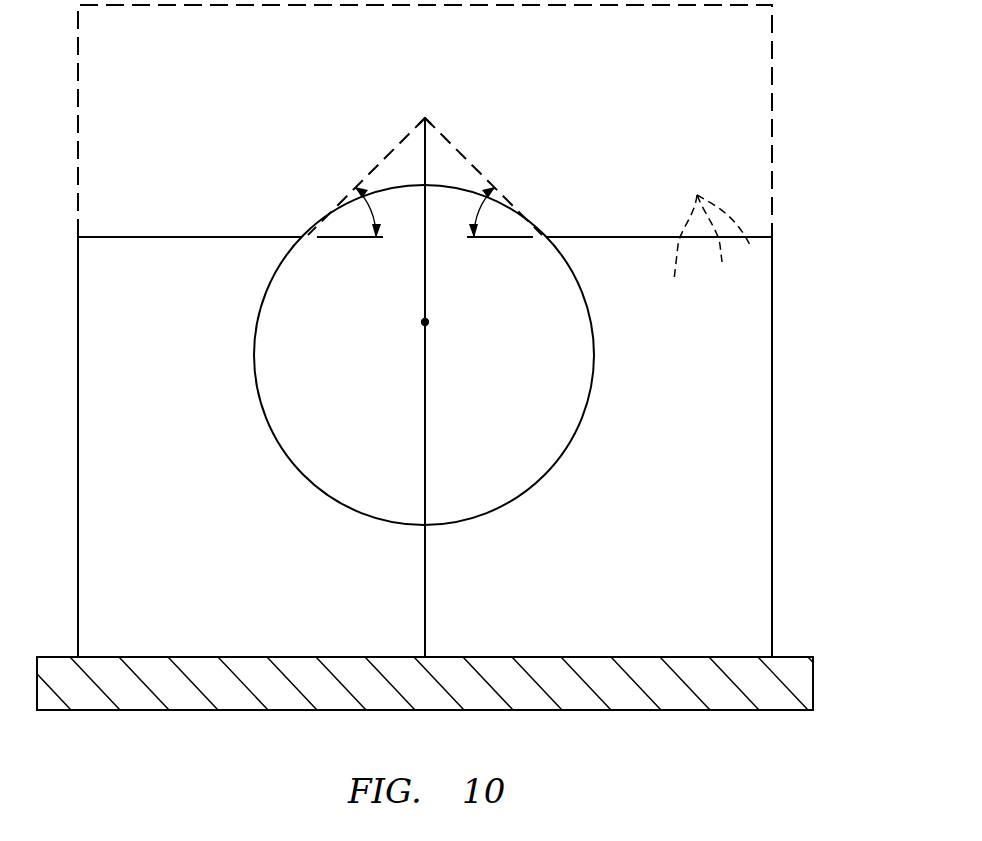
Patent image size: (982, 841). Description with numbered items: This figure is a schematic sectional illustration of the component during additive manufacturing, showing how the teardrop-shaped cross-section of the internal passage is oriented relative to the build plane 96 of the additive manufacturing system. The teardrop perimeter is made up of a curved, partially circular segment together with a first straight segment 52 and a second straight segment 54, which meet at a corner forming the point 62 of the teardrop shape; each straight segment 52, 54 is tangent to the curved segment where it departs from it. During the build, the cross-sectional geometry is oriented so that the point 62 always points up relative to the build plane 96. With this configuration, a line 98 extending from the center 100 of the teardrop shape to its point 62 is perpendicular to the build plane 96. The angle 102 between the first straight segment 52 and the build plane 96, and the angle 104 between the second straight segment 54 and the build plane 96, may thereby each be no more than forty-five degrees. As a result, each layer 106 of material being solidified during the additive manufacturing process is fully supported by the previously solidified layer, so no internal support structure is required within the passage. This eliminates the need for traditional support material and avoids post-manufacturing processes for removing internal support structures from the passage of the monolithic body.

The first straight segment 52 is at (487, 158).
The second straight segment 54 is at (368, 158).
The point 62 is at (425, 118).
The build plane 96 is at (795, 656).
The line 98 is at (424, 406).
The center 100 is at (425, 322).
The angle 102 is at (493, 222).
The angle 104 is at (357, 222).
The layer 106 is at (710, 224).